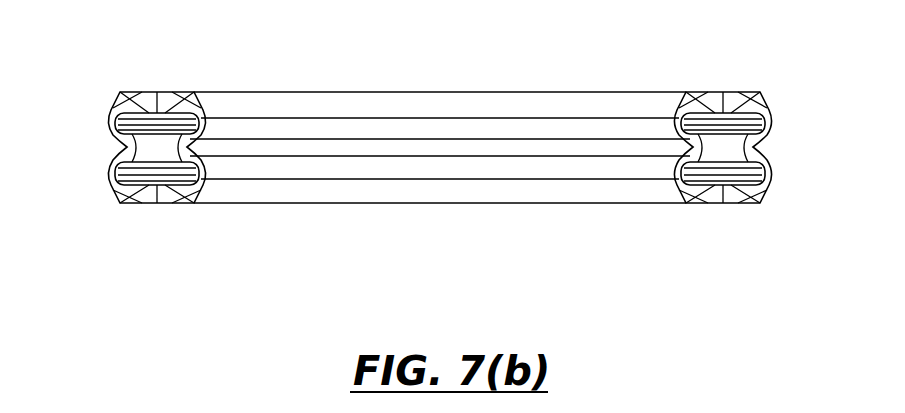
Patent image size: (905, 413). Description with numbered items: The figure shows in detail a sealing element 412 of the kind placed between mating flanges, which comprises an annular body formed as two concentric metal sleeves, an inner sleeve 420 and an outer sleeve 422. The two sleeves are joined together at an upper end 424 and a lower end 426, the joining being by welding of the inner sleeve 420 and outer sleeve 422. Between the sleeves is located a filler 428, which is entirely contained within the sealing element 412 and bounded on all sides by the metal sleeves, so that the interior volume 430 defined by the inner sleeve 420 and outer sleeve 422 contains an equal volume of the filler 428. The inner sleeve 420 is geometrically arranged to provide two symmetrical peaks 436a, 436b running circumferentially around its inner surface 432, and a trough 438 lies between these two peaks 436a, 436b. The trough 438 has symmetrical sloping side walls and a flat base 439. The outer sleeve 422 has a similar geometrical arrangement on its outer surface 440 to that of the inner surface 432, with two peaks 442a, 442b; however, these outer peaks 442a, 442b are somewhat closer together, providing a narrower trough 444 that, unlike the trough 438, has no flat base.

The sealing element 412 is at (536, 86).
The inner sleeve 420 is at (418, 197).
The outer sleeve 422 is at (746, 203).
The upper end 424 is at (722, 92).
The lower end 426 is at (720, 203).
The filler 428 is at (755, 148).
The interior volume 430 is at (712, 168).
The inner surface 432 is at (572, 197).
The first peak 436a is at (207, 130).
The second peak 436b is at (205, 157).
The trough 438 is at (212, 150).
The flat base 439 is at (158, 147).
The outer surface 440 is at (110, 195).
The first outer peak 442a is at (93, 106).
The second outer peak 442b is at (108, 168).
The narrower trough 444 is at (112, 148).